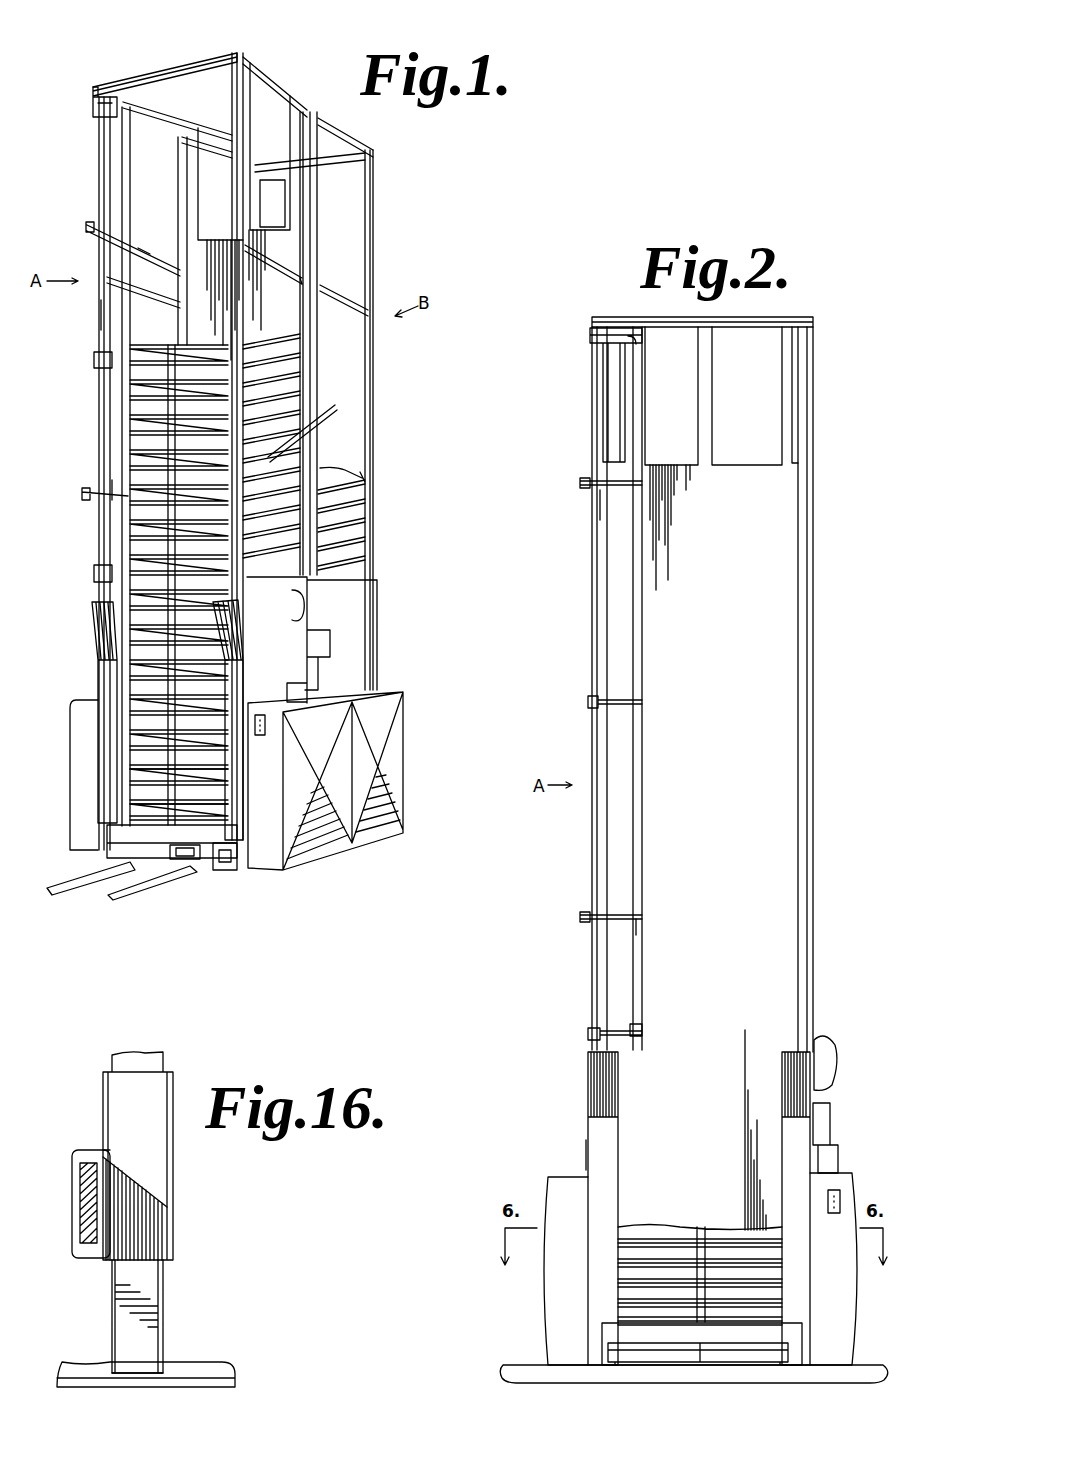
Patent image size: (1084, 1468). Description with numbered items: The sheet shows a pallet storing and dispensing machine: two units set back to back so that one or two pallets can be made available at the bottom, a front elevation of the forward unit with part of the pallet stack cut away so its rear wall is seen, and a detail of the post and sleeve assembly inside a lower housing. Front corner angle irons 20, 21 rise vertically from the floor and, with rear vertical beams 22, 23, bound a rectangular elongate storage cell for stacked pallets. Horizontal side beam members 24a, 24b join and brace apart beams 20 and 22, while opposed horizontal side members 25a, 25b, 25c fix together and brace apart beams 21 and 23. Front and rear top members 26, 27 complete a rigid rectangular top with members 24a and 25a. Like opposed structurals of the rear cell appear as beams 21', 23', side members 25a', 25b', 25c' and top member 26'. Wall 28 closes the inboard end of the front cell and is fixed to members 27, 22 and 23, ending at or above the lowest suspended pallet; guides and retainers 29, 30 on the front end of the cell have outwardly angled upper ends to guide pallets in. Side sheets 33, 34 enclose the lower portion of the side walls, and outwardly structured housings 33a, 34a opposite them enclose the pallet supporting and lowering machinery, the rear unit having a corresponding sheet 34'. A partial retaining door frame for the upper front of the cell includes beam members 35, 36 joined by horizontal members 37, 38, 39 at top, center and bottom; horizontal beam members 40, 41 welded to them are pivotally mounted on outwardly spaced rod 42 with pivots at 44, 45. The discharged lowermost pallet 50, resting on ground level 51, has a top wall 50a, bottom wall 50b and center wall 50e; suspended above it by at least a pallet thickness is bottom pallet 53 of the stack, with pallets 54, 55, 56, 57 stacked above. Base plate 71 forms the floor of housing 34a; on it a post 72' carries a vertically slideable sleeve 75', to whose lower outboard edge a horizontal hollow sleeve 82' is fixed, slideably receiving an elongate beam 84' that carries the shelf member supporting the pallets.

In FIG. 1, the front corner angle iron 20 is at (108, 158).
In FIG. 2, the front corner angle iron 20 is at (600, 578).
In FIG. 1, the front corner angle iron 21 is at (204, 131).
In FIG. 2, the front corner angle iron 21 is at (824, 689).
In FIG. 1, the front corner angle iron 21' is at (392, 420).
In FIG. 1, the rear vertical beam 22 is at (178, 224).
In FIG. 1, the rear vertical beam 23 is at (298, 249).
In FIG. 1, the rear vertical beam 23' is at (329, 343).
In FIG. 1, the horizontal side beam member 24a is at (162, 115).
In FIG. 1, the horizontal side beam member 24b is at (150, 292).
In FIG. 1, the horizontal side member 25a is at (281, 87).
In FIG. 1, the horizontal side member 25a' is at (369, 137).
In FIG. 1, the horizontal side member 25b is at (331, 303).
In FIG. 1, the horizontal side member 25b' is at (375, 288).
In FIG. 1, the horizontal side member 25c is at (304, 452).
In FIG. 1, the horizontal side member 25c' is at (372, 463).
In FIG. 1, the front top member 26 is at (165, 66).
In FIG. 2, the front top member 26 is at (702, 308).
In FIG. 1, the front top member 26' is at (331, 166).
In FIG. 1, the rear top member 27 is at (246, 82).
In FIG. 1, the wall 28 is at (236, 330).
In FIG. 2, the wall 28 is at (712, 880).
In FIG. 1, the guide and retainer 29 is at (98, 680).
In FIG. 2, the guide and retainer 29 is at (612, 1152).
In FIG. 1, the guide and retainer 30 is at (243, 685).
In FIG. 2, the guide and retainer 30 is at (800, 1135).
In FIG. 2, the side sheet 33 is at (588, 1136).
In FIG. 1, the housing 33a is at (70, 727).
In FIG. 2, the housing 33a is at (568, 1177).
In FIG. 2, the side sheet 34 is at (834, 1040).
In FIG. 1, the side sheet 34' is at (335, 640).
In FIG. 1, the housing 34a is at (405, 730).
In FIG. 2, the housing 34a is at (850, 1340).
In FIG. 16, the housing 34a is at (178, 1365).
In FIG. 1, the beam member 35 is at (131, 206).
In FIG. 2, the beam member 35 is at (642, 815).
In FIG. 1, the beam member 36 is at (99, 312).
In FIG. 1, the horizontal member 37 is at (97, 128).
In FIG. 2, the horizontal member 37 is at (632, 343).
In FIG. 1, the horizontal member 38 is at (97, 360).
In FIG. 2, the horizontal member 38 is at (635, 700).
In FIG. 1, the horizontal member 39 is at (97, 578).
In FIG. 2, the horizontal member 39 is at (640, 1032).
In FIG. 1, the horizontal beam member 40 is at (99, 215).
In FIG. 2, the horizontal beam member 40 is at (600, 493).
In FIG. 1, the horizontal beam member 41 is at (99, 490).
In FIG. 2, the horizontal beam member 41 is at (636, 924).
In FIG. 1, the rod 42 is at (141, 252).
In FIG. 2, the pivot 44 is at (580, 487).
In FIG. 1, the pivot 45 is at (85, 494).
In FIG. 2, the pivot 45 is at (582, 920).
In FIG. 1, the discharged pallet 50 is at (233, 839).
In FIG. 2, the discharged pallet 50 is at (691, 1342).
In FIG. 1, the top wall 50a is at (206, 850).
In FIG. 1, the bottom wall 50b is at (232, 872).
In FIG. 1, the center wall 50e is at (78, 858).
In FIG. 2, the ground level 51 is at (528, 1366).
In FIG. 2, the suspended pallet 53 is at (620, 1319).
In FIG. 1, the second pallet 54 is at (222, 808).
In FIG. 2, the second pallet 54 is at (620, 1300).
In FIG. 1, the stacked pallet 55 is at (222, 790).
In FIG. 2, the stacked pallet 55 is at (620, 1280).
In FIG. 2, the stacked pallet 56 is at (620, 1260).
In FIG. 1, the stacked pallet 57 is at (140, 748).
In FIG. 2, the stacked pallet 57 is at (684, 1238).
In FIG. 16, the base plate 71 is at (225, 1366).
In FIG. 16, the post 72' is at (159, 1316).
In FIG. 16, the sleeve 75' is at (157, 1156).
In FIG. 16, the horizontal hollow sleeve 82' is at (79, 1134).
In FIG. 16, the elongate beam 84' is at (69, 1204).